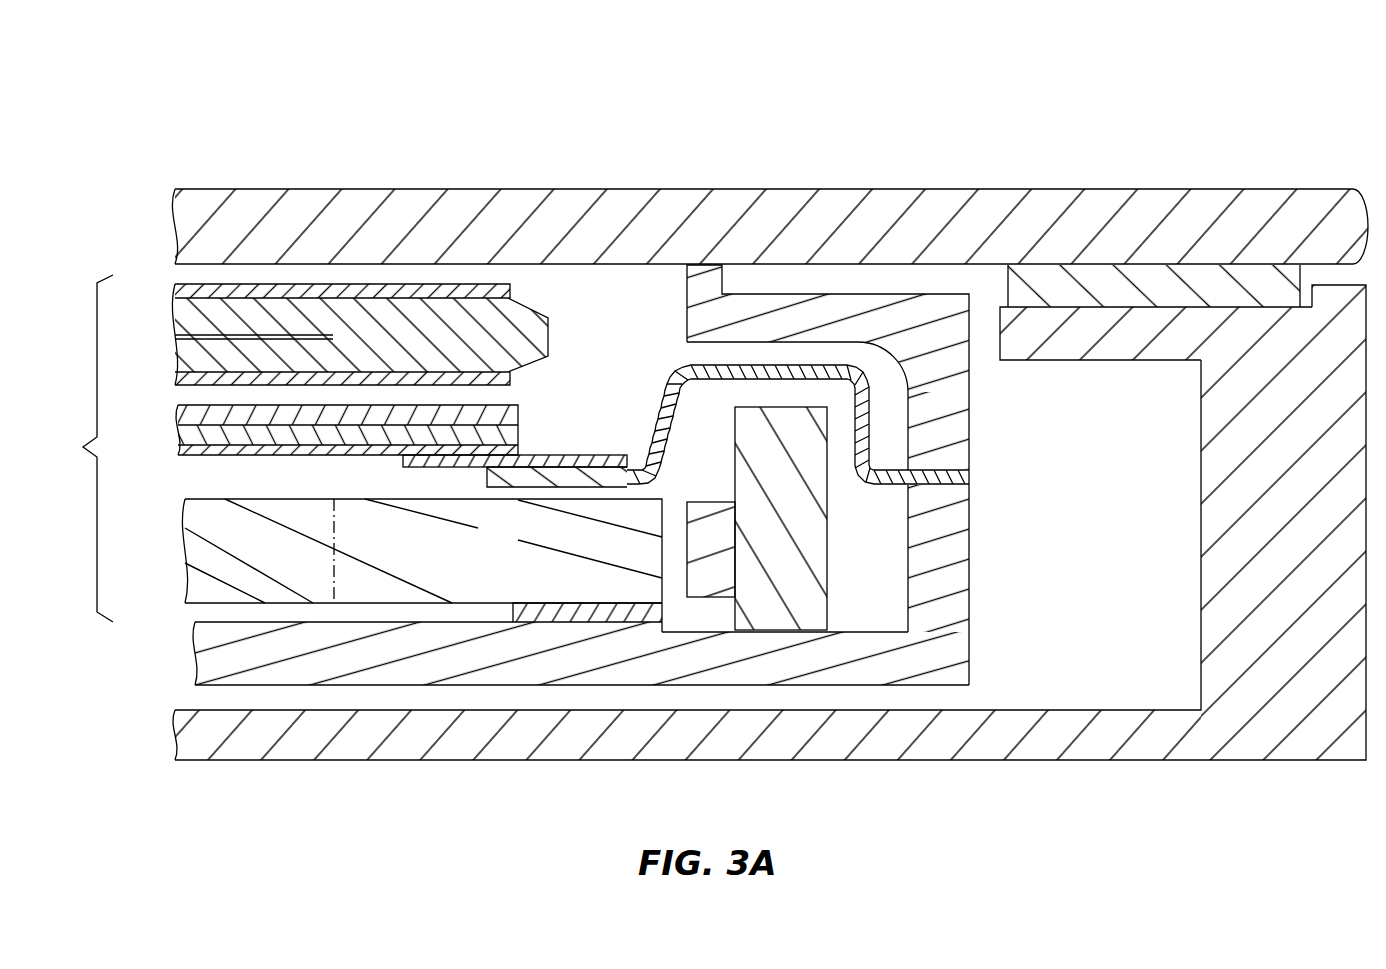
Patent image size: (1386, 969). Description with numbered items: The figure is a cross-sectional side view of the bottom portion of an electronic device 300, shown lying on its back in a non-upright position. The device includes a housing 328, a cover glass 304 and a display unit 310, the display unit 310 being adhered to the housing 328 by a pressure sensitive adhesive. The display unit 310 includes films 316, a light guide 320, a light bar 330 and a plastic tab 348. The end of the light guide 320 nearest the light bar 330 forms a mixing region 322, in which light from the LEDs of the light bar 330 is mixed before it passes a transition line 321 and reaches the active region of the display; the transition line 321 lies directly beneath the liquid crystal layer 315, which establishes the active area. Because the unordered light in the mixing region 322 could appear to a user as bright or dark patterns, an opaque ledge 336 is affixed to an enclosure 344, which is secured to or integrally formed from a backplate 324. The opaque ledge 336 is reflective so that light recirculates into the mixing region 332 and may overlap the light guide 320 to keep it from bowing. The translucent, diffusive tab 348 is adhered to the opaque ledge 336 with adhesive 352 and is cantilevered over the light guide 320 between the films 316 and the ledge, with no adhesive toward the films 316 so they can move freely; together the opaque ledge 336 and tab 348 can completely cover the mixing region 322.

The electronic device 300 is at (701, 440).
The cover glass 304 is at (760, 189).
The display unit 310 is at (348, 450).
The liquid crystal layer 315 is at (178, 302).
The films 316 is at (160, 432).
The light guide 320 is at (392, 549).
The transition line 321 is at (320, 513).
The mixing region 322 is at (510, 559).
The backplate 324 is at (208, 660).
The housing 328 is at (1248, 740).
The light bar 330 is at (700, 577).
The mixing region 332 is at (1155, 282).
The opaque ledge 336 is at (672, 392).
The enclosure 344 is at (937, 533).
The tab 348 is at (536, 462).
The adhesive 352 is at (575, 470).